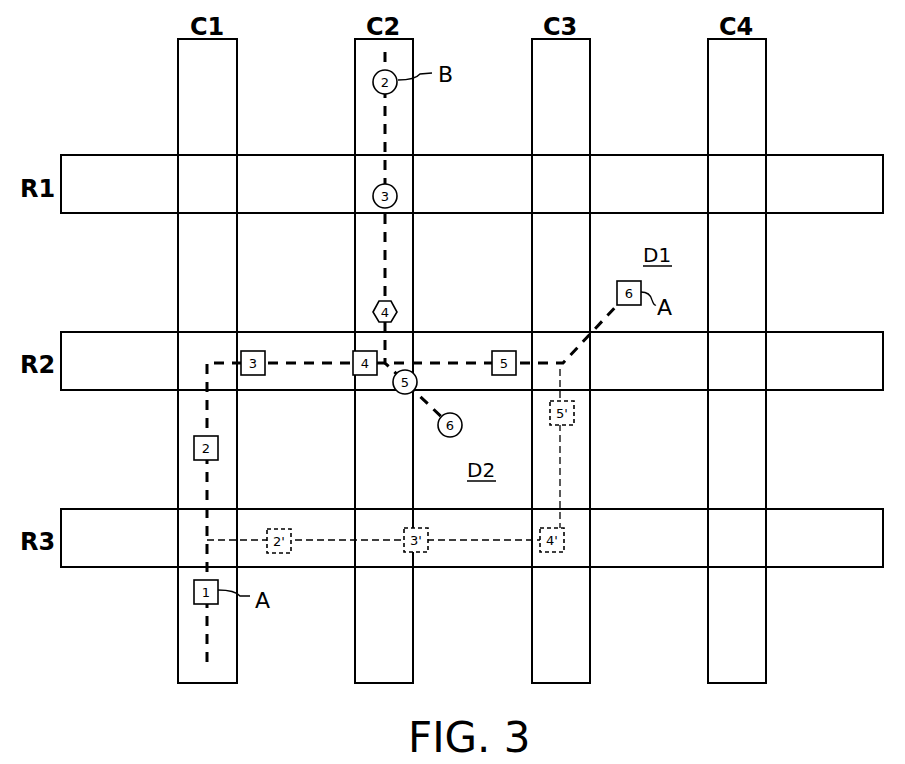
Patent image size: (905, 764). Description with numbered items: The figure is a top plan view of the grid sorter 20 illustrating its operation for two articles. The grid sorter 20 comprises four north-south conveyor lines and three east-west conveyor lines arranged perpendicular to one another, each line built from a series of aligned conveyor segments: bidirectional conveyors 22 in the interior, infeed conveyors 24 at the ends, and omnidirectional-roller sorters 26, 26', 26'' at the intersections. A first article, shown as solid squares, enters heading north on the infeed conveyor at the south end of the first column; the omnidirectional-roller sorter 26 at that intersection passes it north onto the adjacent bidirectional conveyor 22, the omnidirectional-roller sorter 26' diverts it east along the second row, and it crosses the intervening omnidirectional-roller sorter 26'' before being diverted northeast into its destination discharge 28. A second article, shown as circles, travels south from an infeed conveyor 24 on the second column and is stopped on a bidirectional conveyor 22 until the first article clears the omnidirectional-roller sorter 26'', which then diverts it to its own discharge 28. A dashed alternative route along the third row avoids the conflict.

The grid sorter 20 is at (467, 355).
The bidirectional conveyor 22 is at (187, 423).
The infeed conveyor 24 is at (357, 112).
The omnidirectional-roller sorter 26 is at (181, 515).
The omnidirectional-roller sorter 26' is at (179, 337).
The omnidirectional-roller sorter 26'' is at (407, 335).
The discharge 28 is at (610, 232).